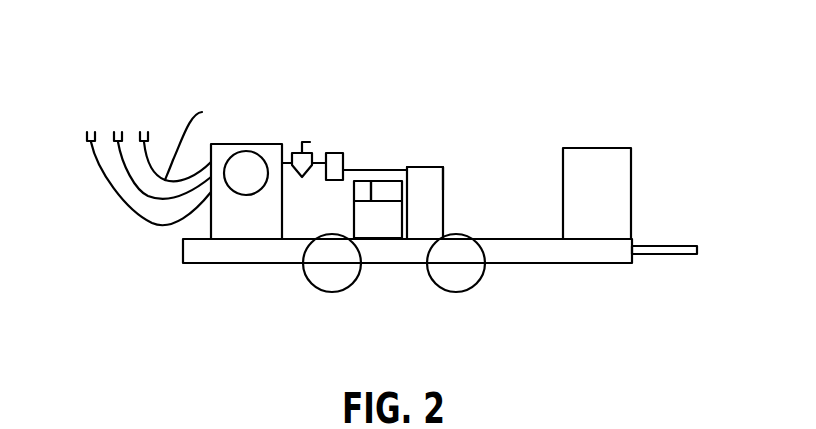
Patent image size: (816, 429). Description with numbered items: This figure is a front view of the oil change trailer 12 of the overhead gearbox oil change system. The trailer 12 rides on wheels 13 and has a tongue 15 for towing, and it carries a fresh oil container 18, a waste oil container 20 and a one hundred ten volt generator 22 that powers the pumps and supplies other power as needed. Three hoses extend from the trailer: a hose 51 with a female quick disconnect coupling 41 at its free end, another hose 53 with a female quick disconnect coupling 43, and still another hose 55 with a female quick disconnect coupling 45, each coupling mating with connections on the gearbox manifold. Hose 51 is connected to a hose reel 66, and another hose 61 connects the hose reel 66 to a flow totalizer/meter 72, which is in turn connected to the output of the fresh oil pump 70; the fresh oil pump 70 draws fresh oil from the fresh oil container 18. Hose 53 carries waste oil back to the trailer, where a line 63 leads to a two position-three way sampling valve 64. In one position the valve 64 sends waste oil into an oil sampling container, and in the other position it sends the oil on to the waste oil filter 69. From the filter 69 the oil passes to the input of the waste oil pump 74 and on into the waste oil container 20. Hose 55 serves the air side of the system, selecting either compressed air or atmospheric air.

The oil change trailer 12 is at (525, 252).
The wheels 13 is at (463, 270).
The tongue 15 is at (667, 246).
The fresh oil container 18 is at (373, 227).
The waste oil container 20 is at (423, 227).
The 110 VAC generator 22 is at (592, 173).
The female quick disconnect coupling 41 is at (91, 132).
The female quick disconnect coupling 43 is at (118, 132).
The female quick disconnect coupling 45 is at (144, 132).
The hose 51 is at (157, 226).
The hose 53 is at (145, 195).
The hose 55 is at (201, 138).
The hose 61 is at (262, 200).
The line 63 is at (348, 168).
The two position-three way sampling valve 64 is at (303, 142).
The hose reel 66 is at (252, 158).
The waste oil filter 69 is at (332, 152).
The fresh oil pump 70 is at (388, 185).
The flow totalizer/meter 72 is at (365, 190).
The waste oil pump 74 is at (430, 175).